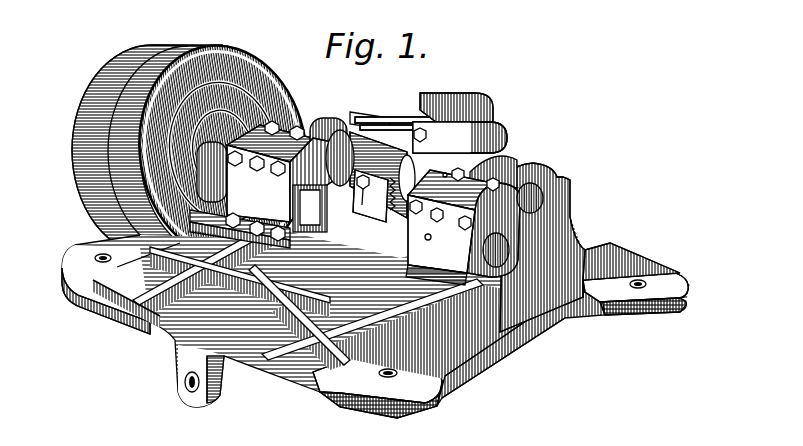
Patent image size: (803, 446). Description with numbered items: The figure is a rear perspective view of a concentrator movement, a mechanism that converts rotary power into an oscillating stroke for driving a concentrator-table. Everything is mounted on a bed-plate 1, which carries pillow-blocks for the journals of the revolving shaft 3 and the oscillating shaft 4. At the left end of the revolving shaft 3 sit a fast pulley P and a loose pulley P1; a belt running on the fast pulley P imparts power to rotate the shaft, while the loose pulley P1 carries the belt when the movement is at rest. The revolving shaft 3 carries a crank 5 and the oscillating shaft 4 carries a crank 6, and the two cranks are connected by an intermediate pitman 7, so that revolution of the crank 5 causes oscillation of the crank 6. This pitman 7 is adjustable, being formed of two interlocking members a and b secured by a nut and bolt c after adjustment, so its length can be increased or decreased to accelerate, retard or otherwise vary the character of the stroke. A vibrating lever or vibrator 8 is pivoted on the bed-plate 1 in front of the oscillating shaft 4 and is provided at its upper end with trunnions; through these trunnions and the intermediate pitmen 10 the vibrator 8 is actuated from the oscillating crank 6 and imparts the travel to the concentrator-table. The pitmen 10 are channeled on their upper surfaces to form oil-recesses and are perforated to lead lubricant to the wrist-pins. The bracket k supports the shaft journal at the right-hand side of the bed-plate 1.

The fast pulley P is at (148, 90).
The loose pulley P1 is at (110, 92).
The bed-plate 1 is at (182, 322).
The interlocking member a is at (310, 235).
The intermediate pitman 7 is at (335, 235).
The nut and bolt c is at (363, 172).
The interlocking member b is at (395, 160).
The crank 5 is at (327, 228).
The crank 6 is at (392, 118).
The pitmen 10 is at (380, 125).
The vibrating lever 8 is at (465, 102).
The bracket k is at (553, 220).
The oscillating shaft 4 is at (546, 196).
The revolving shaft 3 is at (510, 263).